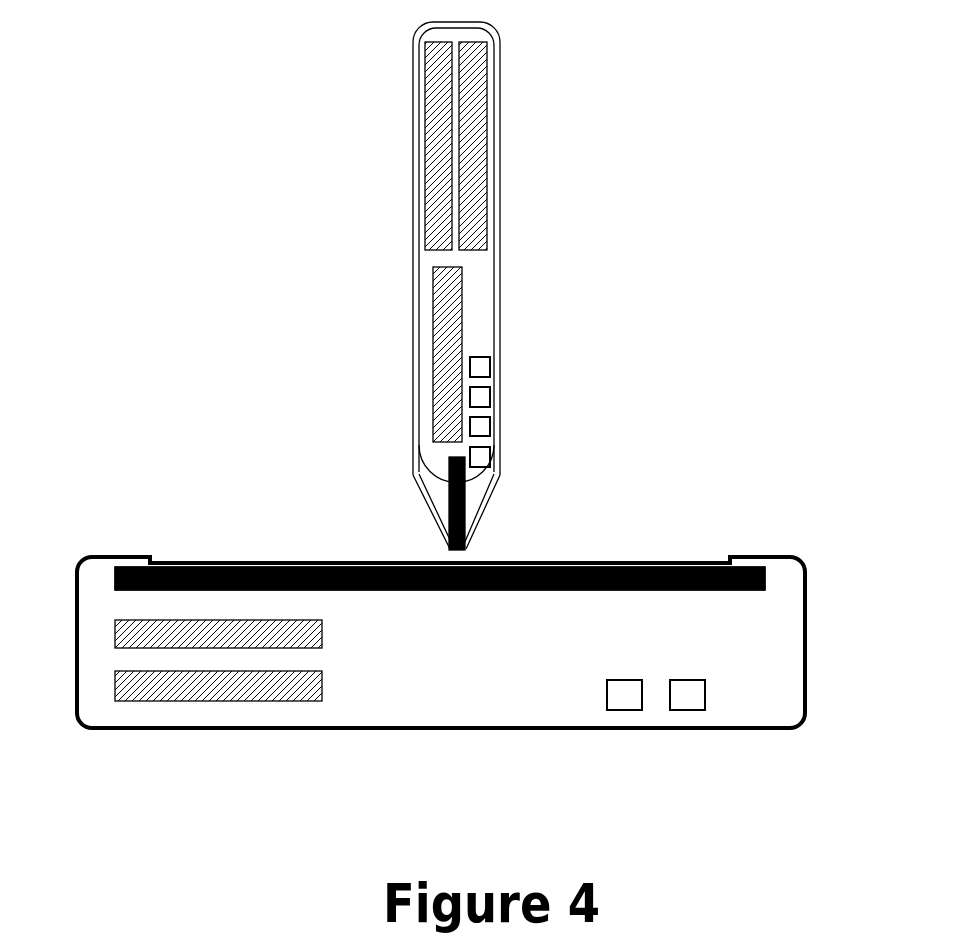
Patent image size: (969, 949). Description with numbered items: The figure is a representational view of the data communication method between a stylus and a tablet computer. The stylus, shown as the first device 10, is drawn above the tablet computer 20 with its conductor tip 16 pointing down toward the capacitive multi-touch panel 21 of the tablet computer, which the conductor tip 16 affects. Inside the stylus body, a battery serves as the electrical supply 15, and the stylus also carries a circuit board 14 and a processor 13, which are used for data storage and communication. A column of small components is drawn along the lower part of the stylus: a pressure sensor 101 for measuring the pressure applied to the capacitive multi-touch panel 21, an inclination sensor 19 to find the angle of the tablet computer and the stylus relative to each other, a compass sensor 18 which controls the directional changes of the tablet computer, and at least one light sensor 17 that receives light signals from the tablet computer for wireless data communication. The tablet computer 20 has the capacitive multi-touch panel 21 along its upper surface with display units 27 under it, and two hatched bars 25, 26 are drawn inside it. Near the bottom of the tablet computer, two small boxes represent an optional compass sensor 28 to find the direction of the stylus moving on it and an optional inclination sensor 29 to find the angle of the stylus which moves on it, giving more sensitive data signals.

The first device 10 is at (503, 308).
The processor 13 is at (440, 135).
The electrical supply 15 is at (475, 138).
The circuit board 14 is at (445, 353).
The conductor tip 16 is at (455, 522).
The pressure sensor 101 is at (490, 367).
The inclination sensor 19 is at (490, 398).
The compass sensor 18 is at (490, 428).
The light sensor 17 is at (490, 458).
The electronic device 20 is at (788, 583).
The capacitive multi-touch panel 21 is at (620, 567).
The display units 27 is at (672, 590).
The first coil 25 is at (303, 633).
The second coil 26 is at (308, 683).
The compass sensor 28 is at (623, 710).
The inclination sensor 29 is at (690, 710).